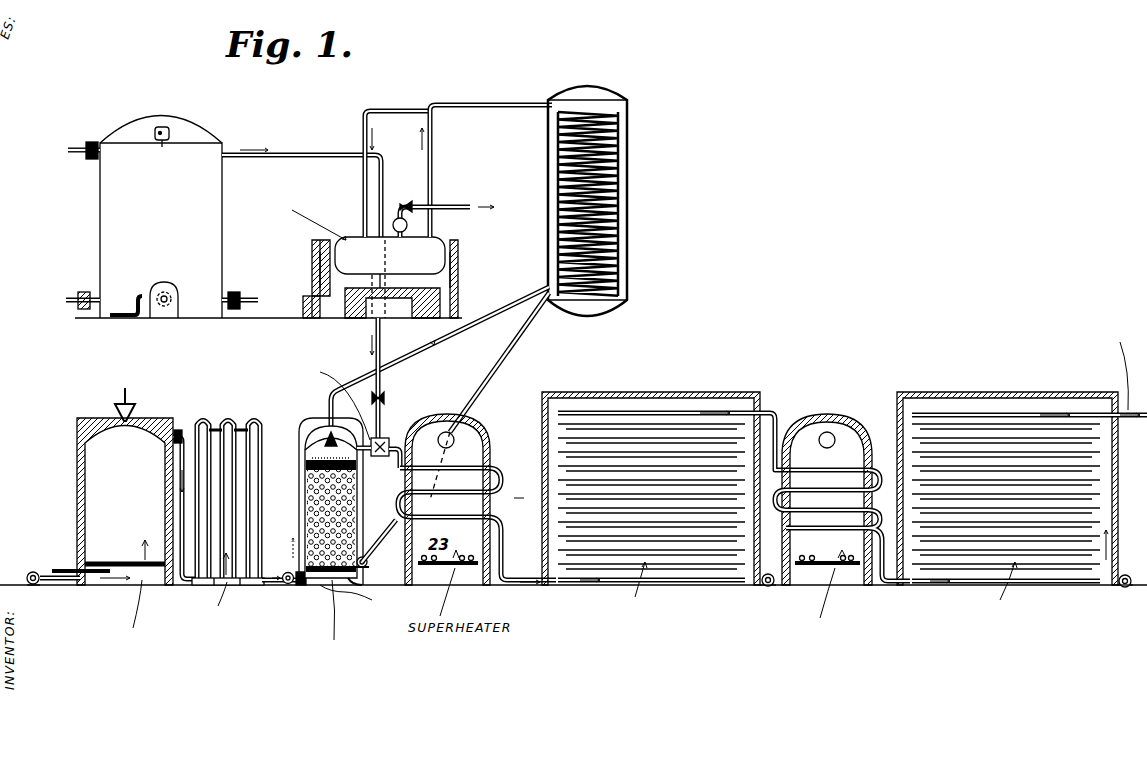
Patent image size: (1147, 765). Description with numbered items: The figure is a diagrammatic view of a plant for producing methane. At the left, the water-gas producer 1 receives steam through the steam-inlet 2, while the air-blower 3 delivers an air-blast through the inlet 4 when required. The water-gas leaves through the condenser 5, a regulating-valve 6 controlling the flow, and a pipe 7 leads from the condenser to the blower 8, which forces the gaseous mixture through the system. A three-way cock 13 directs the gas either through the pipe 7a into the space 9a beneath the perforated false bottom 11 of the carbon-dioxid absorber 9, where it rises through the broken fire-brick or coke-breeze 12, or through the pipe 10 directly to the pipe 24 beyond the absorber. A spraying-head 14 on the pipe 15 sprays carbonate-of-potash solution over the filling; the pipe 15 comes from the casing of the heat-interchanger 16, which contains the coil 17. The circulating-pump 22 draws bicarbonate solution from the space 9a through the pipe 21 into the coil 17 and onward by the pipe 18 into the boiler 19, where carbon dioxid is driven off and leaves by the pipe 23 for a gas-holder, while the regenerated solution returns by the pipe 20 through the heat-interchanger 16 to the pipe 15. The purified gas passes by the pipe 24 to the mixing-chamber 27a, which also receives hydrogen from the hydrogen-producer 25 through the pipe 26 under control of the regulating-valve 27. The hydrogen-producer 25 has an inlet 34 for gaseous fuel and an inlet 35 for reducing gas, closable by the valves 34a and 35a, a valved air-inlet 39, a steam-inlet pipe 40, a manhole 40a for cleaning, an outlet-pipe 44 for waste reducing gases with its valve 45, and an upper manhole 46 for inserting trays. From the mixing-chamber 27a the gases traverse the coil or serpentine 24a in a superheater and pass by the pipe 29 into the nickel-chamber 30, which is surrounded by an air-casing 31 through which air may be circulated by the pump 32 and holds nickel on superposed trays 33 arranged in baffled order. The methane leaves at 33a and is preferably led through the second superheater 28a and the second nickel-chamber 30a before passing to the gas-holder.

The water-gas producer 1 is at (85, 522).
The steam-inlet 2 is at (110, 563).
The air-blower 3 is at (28, 572).
The inlet 4 is at (88, 586).
The condenser 5 is at (262, 505).
The regulating-valve 6 is at (180, 428).
The pipe 7 is at (265, 586).
The pipe 7a is at (345, 594).
The blower 8 is at (287, 572).
The carbon-dioxid absorber 9 is at (350, 520).
The space below the false bottom 9a is at (364, 582).
The pipe 10 is at (298, 525).
The perforated false bottom or grid 11 is at (385, 592).
The broken fire-brick or coke-breeze 12 is at (356, 497).
The three-way cock 13 is at (302, 587).
The spraying-head 14 is at (326, 440).
The pipe 15 is at (400, 360).
The heat-interchanger 16 is at (547, 256).
The coil 17 is at (616, 226).
The pipe 18 is at (366, 215).
The boiler 19 is at (358, 263).
The pipe 20 is at (433, 192).
The pipe 21 is at (510, 350).
The circulating-pump 22 is at (372, 548).
The pipe 23 is at (470, 209).
The pipe 24 is at (368, 470).
The coil or serpentine 24a is at (508, 492).
The hydrogen-producer 25 is at (161, 217).
The pipe 26 is at (268, 160).
The regulating-valve 27 is at (386, 397).
The mixing-chamber 27a is at (386, 438).
The second superheater 28a is at (824, 525).
The pipe 29 is at (508, 587).
The nickel-chamber 30 is at (530, 532).
The second nickel-chamber 30a is at (1112, 528).
The air-casing 31 is at (542, 436).
The pump 32 is at (768, 587).
The trays 33 is at (608, 460).
The methane outlet 33a is at (772, 410).
The inlet for gaseous fuel 34 is at (256, 300).
The valve 34a is at (236, 292).
The inlet for producer or water gas 35 is at (64, 300).
The valve 35a is at (82, 292).
The valved air-inlet 39 is at (174, 302).
The steam-inlet pipe 40 is at (125, 316).
The manhole 40a is at (160, 282).
The outlet-pipe 44 is at (92, 158).
The valve 45 is at (68, 147).
The manhole 46 is at (160, 142).